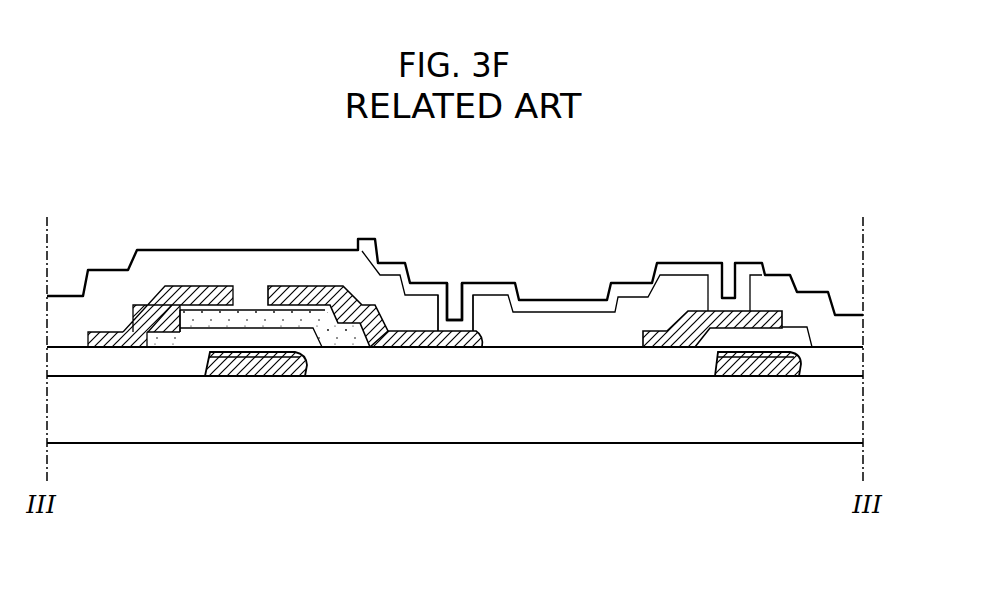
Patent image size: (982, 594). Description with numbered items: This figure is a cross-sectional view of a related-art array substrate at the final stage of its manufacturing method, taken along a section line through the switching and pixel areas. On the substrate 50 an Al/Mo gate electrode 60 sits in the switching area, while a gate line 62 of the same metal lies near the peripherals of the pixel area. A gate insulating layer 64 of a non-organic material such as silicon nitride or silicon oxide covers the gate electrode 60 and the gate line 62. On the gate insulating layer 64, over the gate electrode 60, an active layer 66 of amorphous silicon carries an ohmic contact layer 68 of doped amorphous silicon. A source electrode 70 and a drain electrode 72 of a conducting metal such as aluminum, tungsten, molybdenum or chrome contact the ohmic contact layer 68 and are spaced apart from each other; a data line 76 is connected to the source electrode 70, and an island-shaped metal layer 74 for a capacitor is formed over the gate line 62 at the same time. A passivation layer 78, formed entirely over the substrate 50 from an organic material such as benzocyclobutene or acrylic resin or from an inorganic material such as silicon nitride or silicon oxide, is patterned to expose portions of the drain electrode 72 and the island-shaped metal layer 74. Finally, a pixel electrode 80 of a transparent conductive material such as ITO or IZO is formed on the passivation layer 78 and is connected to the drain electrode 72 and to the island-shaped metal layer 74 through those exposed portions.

The substrate 50 is at (496, 421).
The gate electrode 60 is at (306, 376).
The gate line 62 is at (783, 340).
The gate insulating layer 64 is at (559, 360).
The active layer 66 is at (270, 318).
The ohmic contact layer 68 is at (316, 300).
The source electrode 70 is at (195, 300).
The drain electrode 72 is at (433, 346).
The island-shaped metal layer 74 is at (700, 311).
The data line 76 is at (107, 332).
The passivation layer 78 is at (246, 250).
The pixel electrode 80 is at (484, 278).